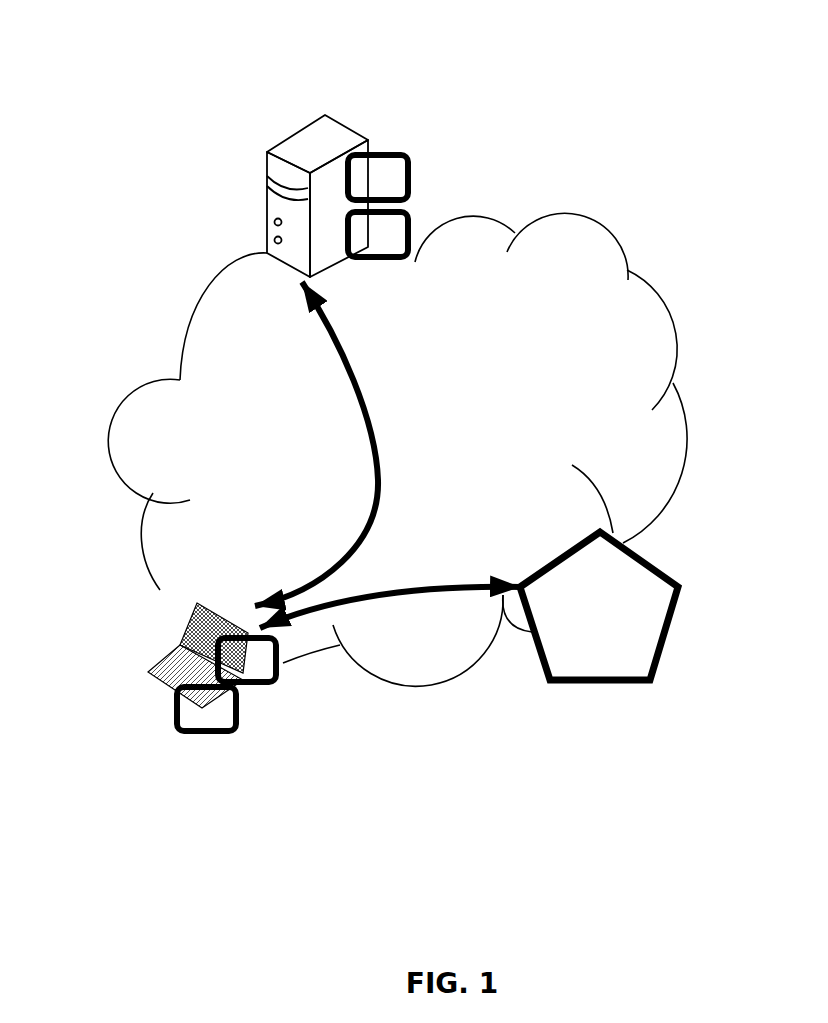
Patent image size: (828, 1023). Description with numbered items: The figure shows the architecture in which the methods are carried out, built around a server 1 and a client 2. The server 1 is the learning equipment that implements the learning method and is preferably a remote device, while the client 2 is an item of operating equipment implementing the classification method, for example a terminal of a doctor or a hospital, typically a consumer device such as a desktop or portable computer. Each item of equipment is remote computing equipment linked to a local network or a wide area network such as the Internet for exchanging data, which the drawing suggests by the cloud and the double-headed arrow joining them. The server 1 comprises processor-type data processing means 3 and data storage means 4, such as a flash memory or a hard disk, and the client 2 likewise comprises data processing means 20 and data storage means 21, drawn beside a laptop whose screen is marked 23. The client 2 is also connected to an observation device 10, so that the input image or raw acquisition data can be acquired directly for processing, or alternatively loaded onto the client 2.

The server 1 is at (327, 110).
The data processing means 3 is at (415, 167).
The data storage means 4 is at (414, 242).
The client 2 is at (219, 705).
The client device display 23 is at (182, 627).
The data processing means 20 is at (285, 687).
The data storage means 21 is at (235, 732).
The observation device 10 is at (577, 688).